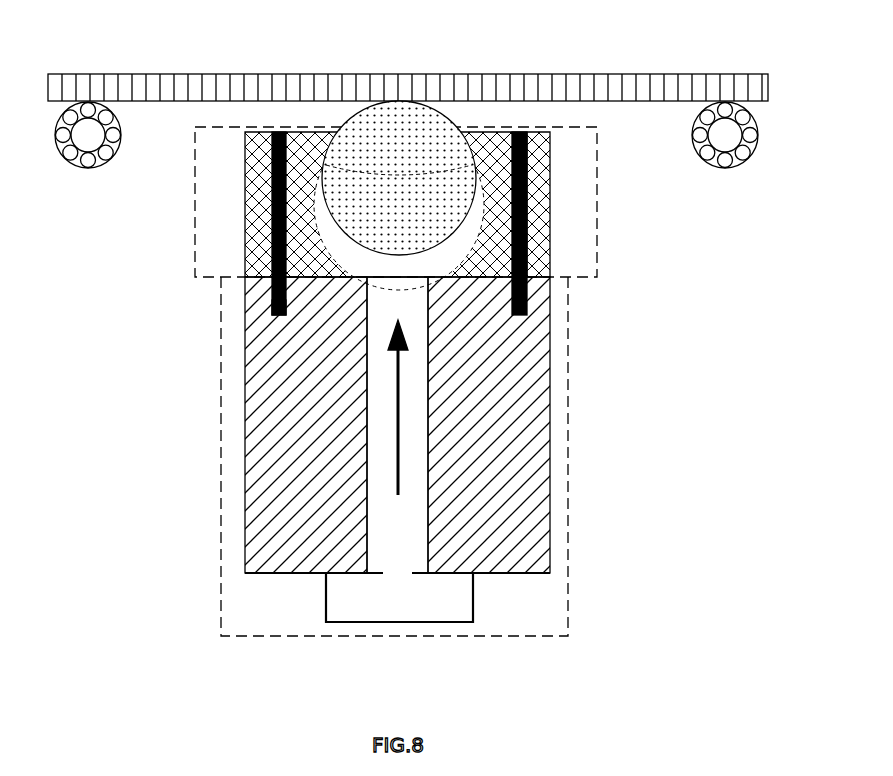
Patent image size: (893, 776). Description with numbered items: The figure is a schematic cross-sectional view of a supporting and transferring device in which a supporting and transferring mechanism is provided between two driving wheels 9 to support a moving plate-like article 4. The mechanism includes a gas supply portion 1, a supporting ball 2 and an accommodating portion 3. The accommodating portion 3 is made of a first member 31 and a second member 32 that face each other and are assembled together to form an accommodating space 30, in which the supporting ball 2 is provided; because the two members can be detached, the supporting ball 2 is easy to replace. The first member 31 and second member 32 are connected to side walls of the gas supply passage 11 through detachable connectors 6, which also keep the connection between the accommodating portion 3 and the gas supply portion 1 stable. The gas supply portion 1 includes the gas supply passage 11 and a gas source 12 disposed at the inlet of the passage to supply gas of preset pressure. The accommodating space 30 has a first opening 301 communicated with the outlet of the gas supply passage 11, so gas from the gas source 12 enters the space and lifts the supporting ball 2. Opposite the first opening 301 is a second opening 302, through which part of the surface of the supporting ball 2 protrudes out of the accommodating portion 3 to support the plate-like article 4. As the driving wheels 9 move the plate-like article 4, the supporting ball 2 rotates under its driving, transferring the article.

The gas supply portion 1 is at (569, 390).
The gas supply passage 11 is at (410, 462).
The gas source 12 is at (420, 596).
The supporting ball 2 is at (360, 185).
The accommodating portion 3 is at (597, 204).
The accommodating space 30 is at (330, 245).
The first opening 301 is at (433, 267).
The second opening 302 is at (547, 188).
The first member 31 is at (250, 207).
The second member 32 is at (547, 186).
The plate-like article 4 is at (215, 90).
The detachable connector 6 is at (265, 312).
The driving wheel 9 is at (90, 138).